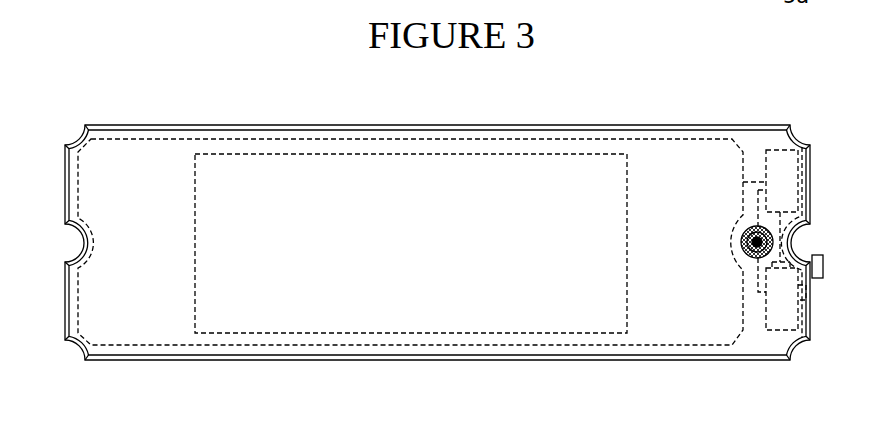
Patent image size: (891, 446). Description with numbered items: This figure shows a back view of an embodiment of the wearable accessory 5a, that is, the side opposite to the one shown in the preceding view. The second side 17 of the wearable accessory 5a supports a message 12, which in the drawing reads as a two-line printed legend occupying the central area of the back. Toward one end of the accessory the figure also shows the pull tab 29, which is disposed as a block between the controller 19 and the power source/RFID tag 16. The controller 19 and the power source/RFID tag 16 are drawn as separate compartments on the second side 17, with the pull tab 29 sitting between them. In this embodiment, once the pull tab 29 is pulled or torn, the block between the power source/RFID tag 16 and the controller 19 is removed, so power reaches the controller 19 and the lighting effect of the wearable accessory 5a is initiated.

The wearable accessory 5a is at (136, 104).
The second side 17 is at (150, 282).
The message 12 is at (420, 332).
The controller 19 is at (780, 172).
The pull tab 29 is at (818, 254).
The power source/RFID tag 16 is at (781, 318).